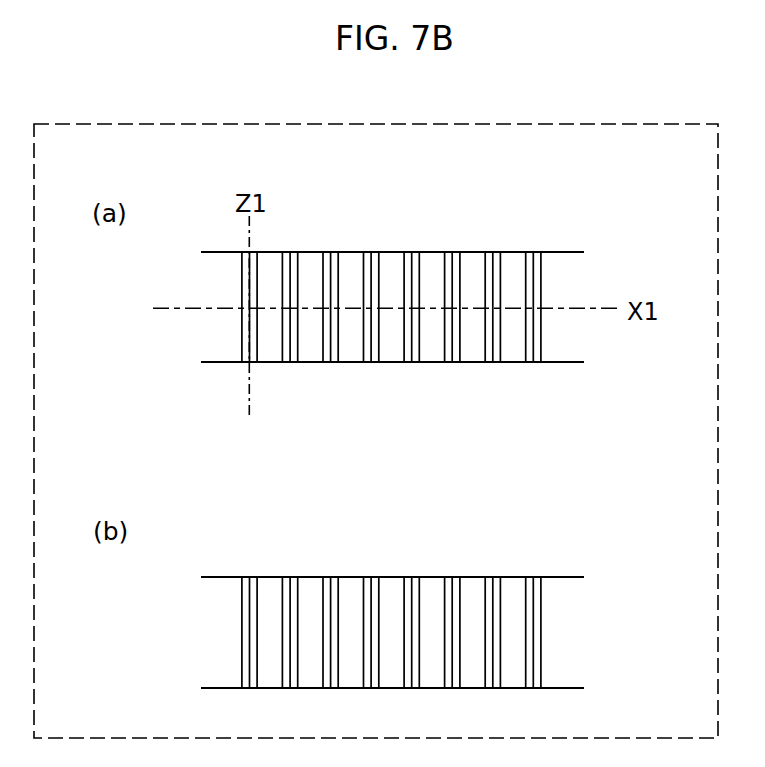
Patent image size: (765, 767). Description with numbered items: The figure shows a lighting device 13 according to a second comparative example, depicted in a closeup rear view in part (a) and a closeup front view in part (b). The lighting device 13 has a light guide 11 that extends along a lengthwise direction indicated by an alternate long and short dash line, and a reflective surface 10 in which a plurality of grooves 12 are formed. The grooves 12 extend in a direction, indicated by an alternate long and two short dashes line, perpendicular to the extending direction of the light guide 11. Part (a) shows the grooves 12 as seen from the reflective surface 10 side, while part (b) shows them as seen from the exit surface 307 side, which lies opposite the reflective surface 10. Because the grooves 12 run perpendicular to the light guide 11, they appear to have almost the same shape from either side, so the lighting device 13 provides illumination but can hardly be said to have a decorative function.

The reflective surface 10 is at (432, 272).
The light guide 11 is at (325, 252).
The grooves 12 is at (492, 282).
The lighting device 13 is at (416, 418).
The exit surface 307 is at (434, 596).